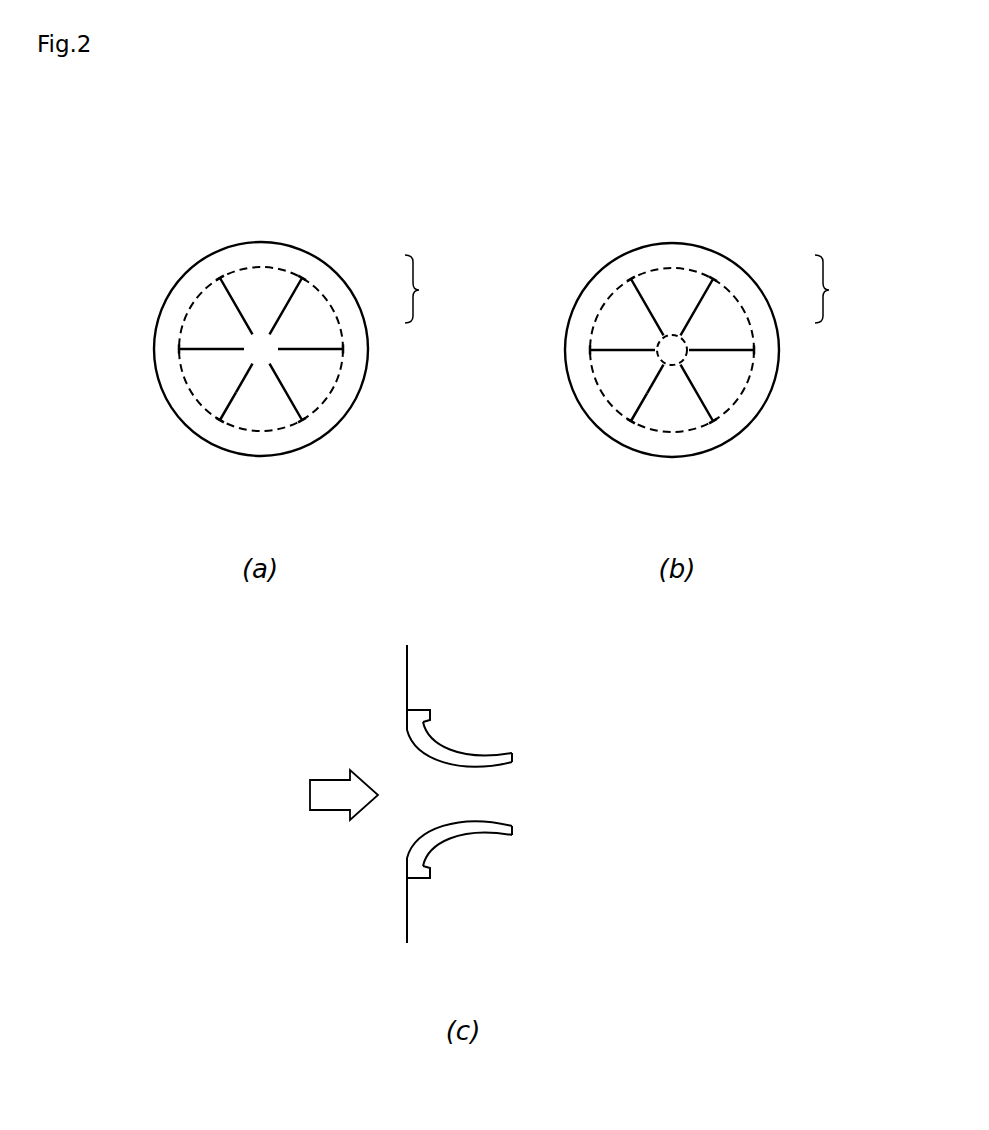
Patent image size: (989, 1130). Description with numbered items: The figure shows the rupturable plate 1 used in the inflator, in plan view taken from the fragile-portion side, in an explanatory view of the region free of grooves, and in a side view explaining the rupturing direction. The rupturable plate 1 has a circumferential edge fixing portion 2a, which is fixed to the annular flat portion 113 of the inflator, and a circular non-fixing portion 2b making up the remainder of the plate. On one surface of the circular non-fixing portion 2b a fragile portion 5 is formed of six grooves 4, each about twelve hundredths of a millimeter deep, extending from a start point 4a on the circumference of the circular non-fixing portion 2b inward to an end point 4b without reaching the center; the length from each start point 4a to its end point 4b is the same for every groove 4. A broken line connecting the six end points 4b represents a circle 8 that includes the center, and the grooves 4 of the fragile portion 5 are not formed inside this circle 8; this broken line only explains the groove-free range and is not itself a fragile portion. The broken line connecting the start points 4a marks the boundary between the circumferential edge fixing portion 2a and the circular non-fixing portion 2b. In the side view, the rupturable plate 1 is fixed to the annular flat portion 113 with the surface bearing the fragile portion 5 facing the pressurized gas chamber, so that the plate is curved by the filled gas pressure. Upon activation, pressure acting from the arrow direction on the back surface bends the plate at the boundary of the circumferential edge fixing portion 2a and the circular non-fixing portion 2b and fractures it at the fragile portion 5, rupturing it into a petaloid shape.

The rupturable plate 1 is at (311, 232).
The circumferential edge fixing portion 2a is at (208, 272).
The circular non-fixing portion 2b is at (313, 385).
The groove 4 is at (214, 347).
The start point 4a is at (223, 413).
The end point 4b is at (252, 360).
The fragile portion 5 is at (628, 289).
The circle 8 is at (678, 355).
The annular flat portion 113 is at (408, 668).